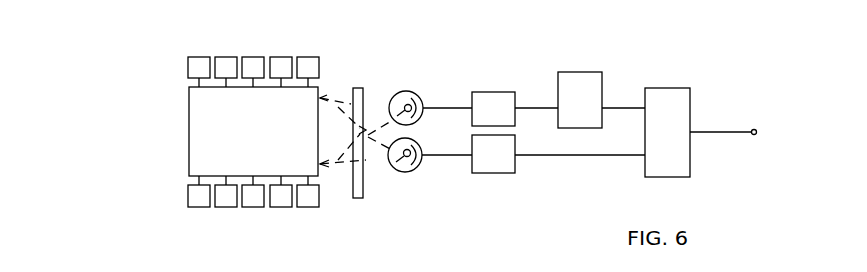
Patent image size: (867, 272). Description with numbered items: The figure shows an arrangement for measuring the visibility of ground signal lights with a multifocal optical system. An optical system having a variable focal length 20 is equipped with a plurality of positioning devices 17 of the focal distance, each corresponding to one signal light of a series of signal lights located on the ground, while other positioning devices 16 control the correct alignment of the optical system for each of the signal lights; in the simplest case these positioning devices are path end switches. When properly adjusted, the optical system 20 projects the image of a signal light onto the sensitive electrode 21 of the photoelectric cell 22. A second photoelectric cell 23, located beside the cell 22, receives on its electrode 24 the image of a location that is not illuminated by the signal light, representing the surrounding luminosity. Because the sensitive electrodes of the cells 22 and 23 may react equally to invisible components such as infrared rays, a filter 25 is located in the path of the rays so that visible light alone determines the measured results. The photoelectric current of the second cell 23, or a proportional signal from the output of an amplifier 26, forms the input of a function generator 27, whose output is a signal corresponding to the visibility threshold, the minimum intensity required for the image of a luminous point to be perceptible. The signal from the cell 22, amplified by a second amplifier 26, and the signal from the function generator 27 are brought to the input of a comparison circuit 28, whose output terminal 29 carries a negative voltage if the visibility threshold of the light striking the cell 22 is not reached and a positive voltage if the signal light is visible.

The positioning devices 16 is at (308, 207).
The positioning devices of the focal distance 17 is at (307, 57).
The optical system having a variable focal length 20 is at (189, 177).
The sensitive electrode 21 is at (398, 170).
The photoelectric cell 22 is at (419, 167).
The second photoelectric cell 23 is at (416, 106).
The electrode 24 is at (407, 92).
The filter 25 is at (363, 92).
The amplifier 26 is at (532, 176).
The function generator 27 is at (613, 82).
The comparison circuit 28 is at (680, 100).
The output terminal 29 is at (752, 130).